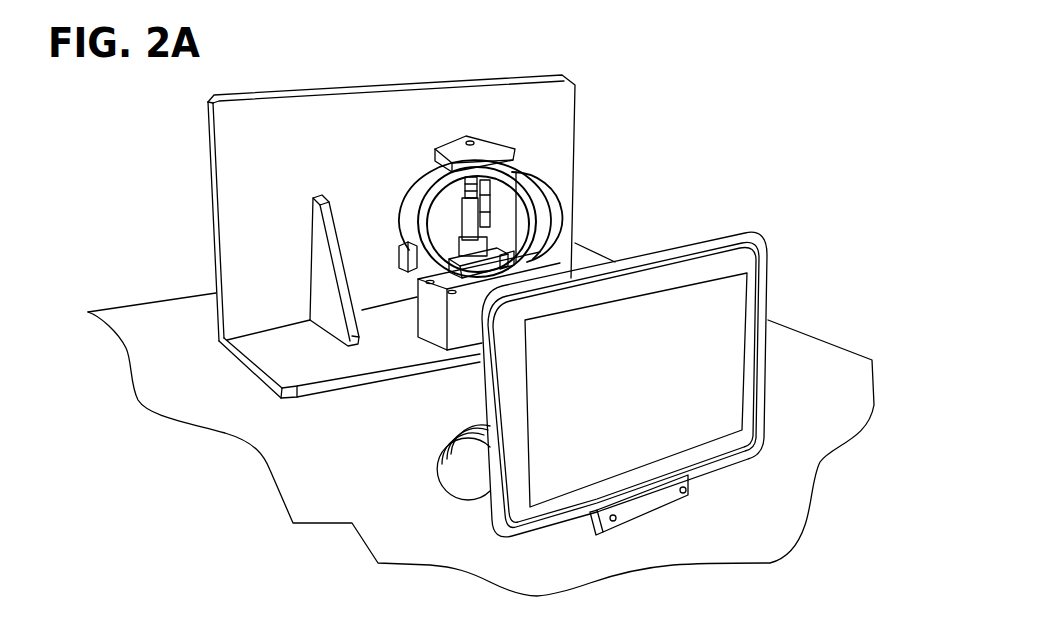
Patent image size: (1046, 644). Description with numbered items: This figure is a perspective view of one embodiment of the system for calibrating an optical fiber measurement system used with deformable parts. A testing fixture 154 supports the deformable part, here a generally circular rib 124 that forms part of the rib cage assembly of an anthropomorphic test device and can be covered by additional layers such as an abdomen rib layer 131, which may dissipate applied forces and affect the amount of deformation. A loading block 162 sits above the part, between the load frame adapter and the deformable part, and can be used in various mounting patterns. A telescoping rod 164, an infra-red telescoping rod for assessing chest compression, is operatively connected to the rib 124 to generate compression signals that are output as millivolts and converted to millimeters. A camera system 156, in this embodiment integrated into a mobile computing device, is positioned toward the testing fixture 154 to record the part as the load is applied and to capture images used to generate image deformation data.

The testing fixture 154 is at (337, 118).
The loading block 162 is at (475, 137).
The abdomen rib layer 131 is at (418, 207).
The telescoping rod 164 is at (463, 227).
The rib 124 is at (400, 258).
The camera system 156 is at (463, 477).